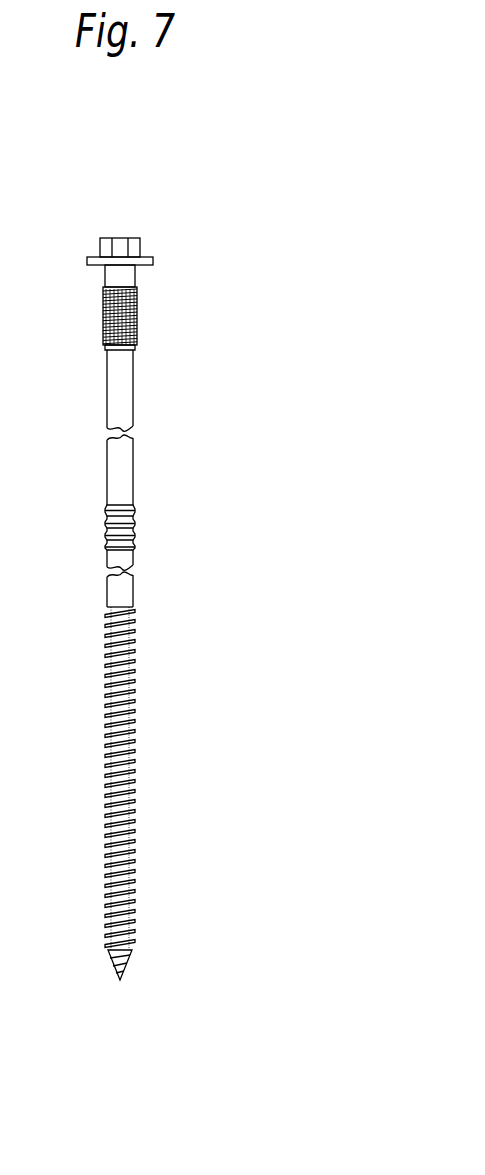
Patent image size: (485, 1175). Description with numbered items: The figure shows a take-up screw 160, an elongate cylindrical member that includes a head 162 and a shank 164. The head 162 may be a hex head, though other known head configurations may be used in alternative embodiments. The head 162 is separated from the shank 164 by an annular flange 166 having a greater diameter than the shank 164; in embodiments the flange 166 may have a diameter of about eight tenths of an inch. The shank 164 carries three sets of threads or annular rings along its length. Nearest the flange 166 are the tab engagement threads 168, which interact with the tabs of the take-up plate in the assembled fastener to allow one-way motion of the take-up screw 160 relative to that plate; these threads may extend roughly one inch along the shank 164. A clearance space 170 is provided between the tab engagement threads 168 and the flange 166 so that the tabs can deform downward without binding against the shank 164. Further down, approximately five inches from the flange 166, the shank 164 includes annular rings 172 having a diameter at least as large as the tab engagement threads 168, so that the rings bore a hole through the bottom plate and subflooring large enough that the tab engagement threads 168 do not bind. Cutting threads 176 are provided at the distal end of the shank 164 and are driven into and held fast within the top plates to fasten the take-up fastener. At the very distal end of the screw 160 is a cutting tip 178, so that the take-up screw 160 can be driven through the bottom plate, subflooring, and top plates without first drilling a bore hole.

The take-up screw 160 is at (191, 225).
The head 162 is at (108, 235).
The shank 164 is at (71, 597).
The annular flange 166 is at (152, 262).
The tab engagement threads 168 is at (137, 316).
The clearance space 170 is at (105, 283).
The annular rings 172 is at (136, 527).
The cutting threads 176 is at (131, 744).
The tip 178 is at (122, 962).